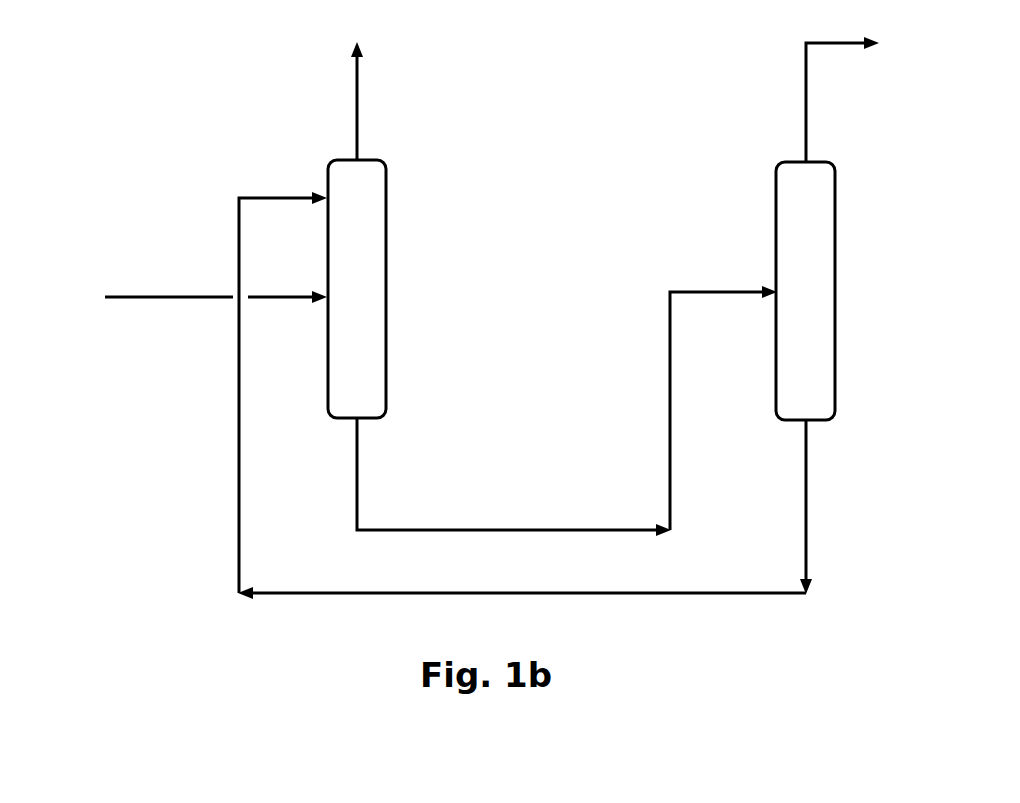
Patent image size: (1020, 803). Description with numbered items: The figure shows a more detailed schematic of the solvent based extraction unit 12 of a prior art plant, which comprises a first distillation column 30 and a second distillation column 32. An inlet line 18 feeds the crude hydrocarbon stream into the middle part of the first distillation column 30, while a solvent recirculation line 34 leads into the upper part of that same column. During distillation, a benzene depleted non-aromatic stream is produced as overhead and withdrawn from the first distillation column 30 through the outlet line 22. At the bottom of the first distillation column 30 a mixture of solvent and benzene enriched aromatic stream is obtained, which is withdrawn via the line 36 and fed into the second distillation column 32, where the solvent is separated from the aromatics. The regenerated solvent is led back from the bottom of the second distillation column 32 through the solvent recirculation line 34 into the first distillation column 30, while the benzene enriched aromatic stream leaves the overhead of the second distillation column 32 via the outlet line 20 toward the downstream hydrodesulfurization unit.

The solvent based extraction unit 12 is at (162, 637).
The inlet line 18 is at (151, 296).
The outlet line for benzene enriched aromatic stream 20 is at (806, 97).
The outlet line for benzene depleted non-aromatic stream 22 is at (355, 106).
The first distillation column 30 is at (386, 229).
The second distillation column 32 is at (776, 226).
The solvent recirculation line 34 is at (636, 594).
The line 36 is at (487, 529).